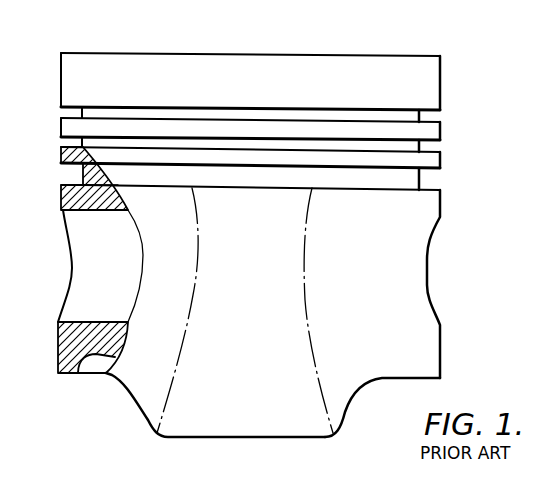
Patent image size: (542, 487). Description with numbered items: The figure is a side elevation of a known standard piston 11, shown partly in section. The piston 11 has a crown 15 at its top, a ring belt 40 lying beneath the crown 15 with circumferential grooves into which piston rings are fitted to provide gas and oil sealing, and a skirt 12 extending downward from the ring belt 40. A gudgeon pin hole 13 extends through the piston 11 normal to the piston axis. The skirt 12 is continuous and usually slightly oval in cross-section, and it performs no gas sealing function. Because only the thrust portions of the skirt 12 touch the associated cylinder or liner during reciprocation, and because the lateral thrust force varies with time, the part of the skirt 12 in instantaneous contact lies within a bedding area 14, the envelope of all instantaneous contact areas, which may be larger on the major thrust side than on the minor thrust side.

The piston 11 is at (281, 247).
The skirt 12 is at (360, 368).
The gudgeon pin hole 13 is at (93, 210).
The bedding area 14 is at (297, 417).
The crown 15 is at (146, 53).
The ring belt 40 is at (250, 60).